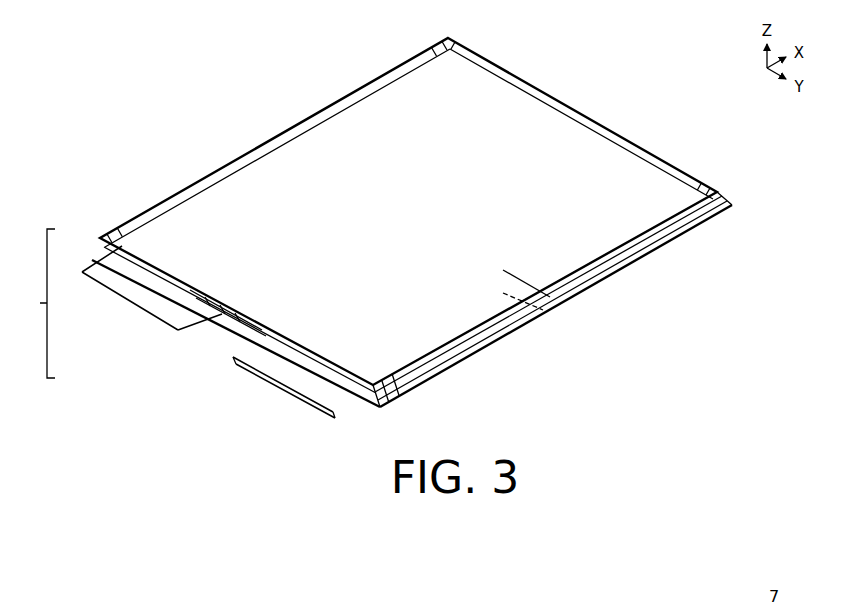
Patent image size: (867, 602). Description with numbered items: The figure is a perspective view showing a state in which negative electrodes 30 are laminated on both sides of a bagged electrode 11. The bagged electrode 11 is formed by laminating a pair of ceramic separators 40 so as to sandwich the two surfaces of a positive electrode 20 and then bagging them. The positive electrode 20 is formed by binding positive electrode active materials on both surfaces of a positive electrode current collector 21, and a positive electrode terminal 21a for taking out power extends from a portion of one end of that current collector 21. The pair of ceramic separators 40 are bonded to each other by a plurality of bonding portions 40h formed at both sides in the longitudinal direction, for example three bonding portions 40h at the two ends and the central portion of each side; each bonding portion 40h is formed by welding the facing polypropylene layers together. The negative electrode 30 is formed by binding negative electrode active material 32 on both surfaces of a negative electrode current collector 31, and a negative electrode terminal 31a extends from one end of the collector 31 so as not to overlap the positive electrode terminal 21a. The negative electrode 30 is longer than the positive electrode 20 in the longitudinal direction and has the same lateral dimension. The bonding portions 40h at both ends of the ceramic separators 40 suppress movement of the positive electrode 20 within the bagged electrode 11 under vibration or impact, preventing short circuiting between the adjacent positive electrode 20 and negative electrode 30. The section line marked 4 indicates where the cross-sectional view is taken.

The bagged electrode 11 is at (35, 303).
The positive electrode 20 is at (101, 288).
The positive electrode current collector 21 is at (178, 328).
The positive electrode terminal 21a is at (137, 298).
The negative electrode 30 is at (165, 290).
The negative electrode current collector 31 is at (232, 356).
The negative electrode terminal 31a is at (272, 394).
The negative electrode active material 32 is at (455, 335).
The ceramic separator 40 is at (182, 289).
The bonding portion 40h is at (440, 44).
The section line IV-IV 4 is at (573, 319).